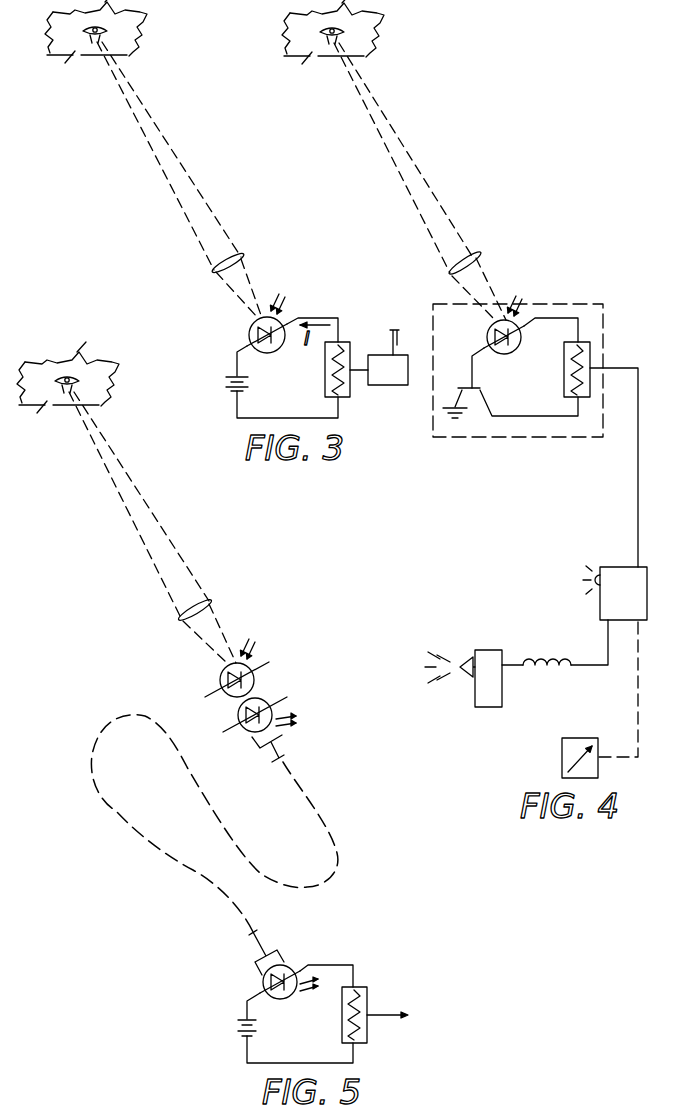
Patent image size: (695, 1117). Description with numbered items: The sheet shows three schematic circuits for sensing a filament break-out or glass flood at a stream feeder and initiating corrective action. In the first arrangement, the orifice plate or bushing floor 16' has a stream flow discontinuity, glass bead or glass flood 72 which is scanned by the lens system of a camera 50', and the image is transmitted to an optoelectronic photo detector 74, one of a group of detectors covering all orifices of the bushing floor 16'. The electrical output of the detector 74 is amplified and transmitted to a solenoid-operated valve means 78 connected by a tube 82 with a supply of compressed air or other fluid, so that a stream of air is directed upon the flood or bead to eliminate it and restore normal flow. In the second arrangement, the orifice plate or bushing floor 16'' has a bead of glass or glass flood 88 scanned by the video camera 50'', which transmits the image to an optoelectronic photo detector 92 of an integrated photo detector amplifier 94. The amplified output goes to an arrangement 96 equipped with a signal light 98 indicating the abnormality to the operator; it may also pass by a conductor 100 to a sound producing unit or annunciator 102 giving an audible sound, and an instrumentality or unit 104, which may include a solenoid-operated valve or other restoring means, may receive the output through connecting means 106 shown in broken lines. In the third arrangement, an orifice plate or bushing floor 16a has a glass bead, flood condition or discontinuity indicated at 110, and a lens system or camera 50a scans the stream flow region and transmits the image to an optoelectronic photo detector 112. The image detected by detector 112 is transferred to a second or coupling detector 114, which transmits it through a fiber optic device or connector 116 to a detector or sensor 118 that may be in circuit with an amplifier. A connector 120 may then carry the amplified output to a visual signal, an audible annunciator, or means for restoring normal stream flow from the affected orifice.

In FIG. 3, the orifice plate or bushing floor 16' is at (114, 32).
In FIG. 3, the glass bead or glass flood 72 is at (93, 44).
In FIG. 3, the camera 50' is at (238, 240).
In FIG. 3, the optoelectronic photo detector 74 is at (250, 326).
In FIG. 3, the solenoid-operated valve means 78 is at (386, 386).
In FIG. 3, the tube 82 is at (393, 332).
In FIG. 4, the orifice plate or bushing floor 16'' is at (357, 33).
In FIG. 4, the bead of glass or glass flood 88 is at (330, 44).
In FIG. 4, the video camera 50'' is at (475, 244).
In FIG. 4, the optoelectronic photo detector 92 is at (487, 329).
In FIG. 4, the integrated photo detector amplifier 94 is at (597, 300).
In FIG. 4, the arrangement 96 is at (628, 566).
In FIG. 4, the signal light 98 is at (598, 580).
In FIG. 4, the conductor 100 is at (592, 664).
In FIG. 4, the sound producing unit or annunciator 102 is at (490, 650).
In FIG. 4, the instrumentality or unit 104 is at (572, 737).
In FIG. 4, the connecting means 106 is at (635, 676).
In FIG. 5, the orifice plate or bushing floor 16a is at (88, 385).
In FIG. 5, the glass bead, flood condition or discontinuity 110 is at (63, 395).
In FIG. 5, the lens system or camera 50a is at (212, 600).
In FIG. 5, the optoelectronic photo detector 112 is at (218, 672).
In FIG. 5, the coupling detector 114 is at (240, 715).
In FIG. 5, the fiber optic device or connector 116 is at (130, 712).
In FIG. 5, the detector or sensor 118 is at (262, 981).
In FIG. 5, the connector 120 is at (383, 1015).